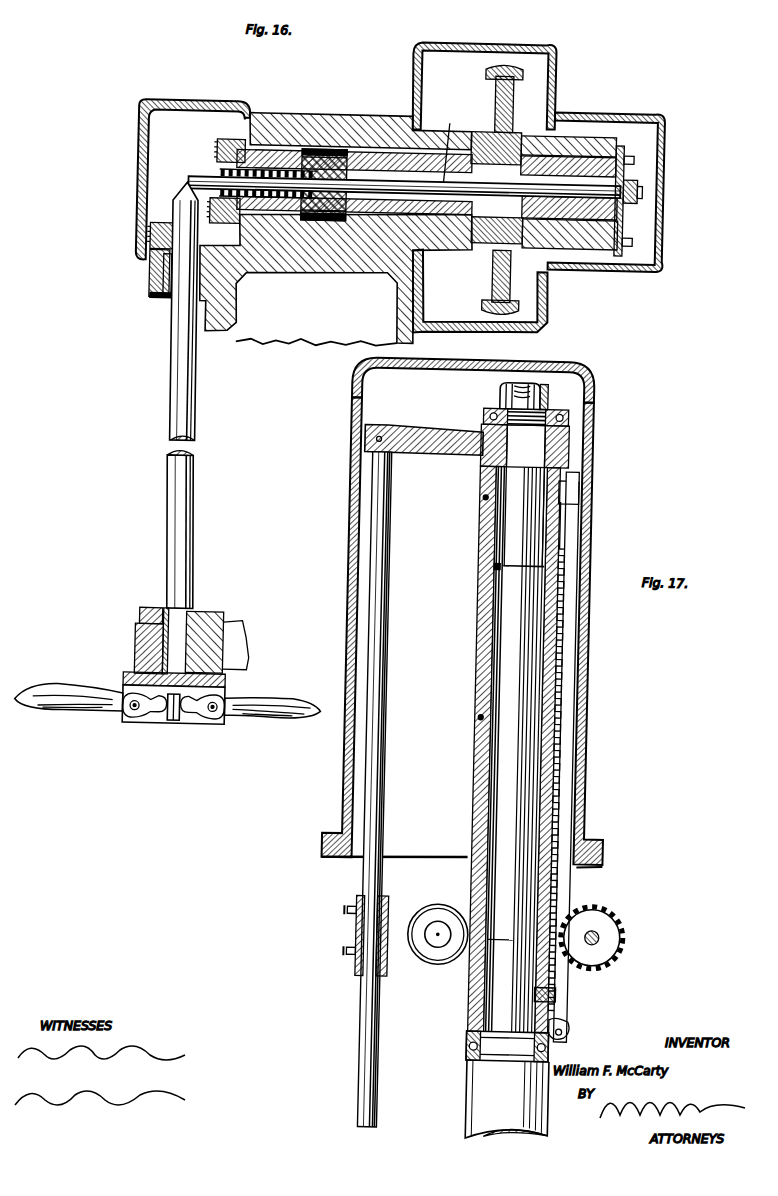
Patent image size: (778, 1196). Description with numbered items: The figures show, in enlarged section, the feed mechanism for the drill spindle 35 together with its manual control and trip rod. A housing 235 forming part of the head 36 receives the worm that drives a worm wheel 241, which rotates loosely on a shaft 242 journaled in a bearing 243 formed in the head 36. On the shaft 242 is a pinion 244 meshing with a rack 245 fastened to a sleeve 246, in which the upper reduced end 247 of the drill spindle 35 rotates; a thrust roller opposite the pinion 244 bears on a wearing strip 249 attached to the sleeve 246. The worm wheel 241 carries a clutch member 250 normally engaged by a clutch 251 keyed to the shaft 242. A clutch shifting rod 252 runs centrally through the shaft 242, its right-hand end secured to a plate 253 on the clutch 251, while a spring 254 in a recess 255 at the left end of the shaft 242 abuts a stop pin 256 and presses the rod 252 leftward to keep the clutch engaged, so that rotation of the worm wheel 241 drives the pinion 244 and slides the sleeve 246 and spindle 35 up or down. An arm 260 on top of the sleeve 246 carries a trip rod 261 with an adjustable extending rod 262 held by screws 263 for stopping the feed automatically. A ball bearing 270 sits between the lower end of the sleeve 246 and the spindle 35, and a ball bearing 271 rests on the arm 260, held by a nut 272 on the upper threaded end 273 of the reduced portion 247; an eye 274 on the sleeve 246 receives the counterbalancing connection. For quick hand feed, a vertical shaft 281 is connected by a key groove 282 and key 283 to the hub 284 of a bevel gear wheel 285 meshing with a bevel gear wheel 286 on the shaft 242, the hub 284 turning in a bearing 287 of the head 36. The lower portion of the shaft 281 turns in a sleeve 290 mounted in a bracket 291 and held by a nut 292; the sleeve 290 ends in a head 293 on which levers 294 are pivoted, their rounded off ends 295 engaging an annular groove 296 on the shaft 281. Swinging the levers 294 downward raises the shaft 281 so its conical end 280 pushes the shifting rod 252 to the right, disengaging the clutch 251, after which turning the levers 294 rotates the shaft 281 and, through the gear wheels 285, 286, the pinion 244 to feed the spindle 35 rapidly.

In FIG. 17, the drill spindle 35 is at (479, 1090).
In FIG. 16, the head 36 is at (289, 345).
In FIG. 16, the housing 235 is at (538, 85).
In FIG. 16, the worm wheel 241 is at (493, 88).
In FIG. 16, the shaft 242 is at (453, 215).
In FIG. 17, the shaft 242 is at (615, 964).
In FIG. 16, the bearing 243 is at (377, 225).
In FIG. 16, the pinion 244 is at (325, 150).
In FIG. 17, the pinion 244 is at (614, 910).
In FIG. 17, the rack 245 is at (566, 763).
In FIG. 17, the sleeve 246 is at (474, 737).
In FIG. 17, the upper reduced end 247 is at (483, 972).
In FIG. 17, the wearing strip 249 is at (474, 780).
In FIG. 16, the clutch member 250 is at (513, 153).
In FIG. 16, the clutch 251 is at (568, 138).
In FIG. 16, the clutch shifting rod 252 is at (447, 143).
In FIG. 17, the clutch shifting rod 252 is at (604, 935).
In FIG. 16, the plate 253 is at (612, 164).
In FIG. 16, the spring 254 is at (282, 150).
In FIG. 16, the recess 255 is at (266, 202).
In FIG. 16, the stop pin 256 is at (216, 178).
In FIG. 17, the arm 260 is at (432, 452).
In FIG. 17, the trip rod 261 is at (388, 705).
In FIG. 17, the extending rod 262 is at (368, 1050).
In FIG. 17, the screws 263 is at (355, 952).
In FIG. 17, the ball bearing 270 is at (473, 1045).
In FIG. 17, the ball bearing 271 is at (482, 417).
In FIG. 17, the nut 272 is at (540, 398).
In FIG. 17, the upper threaded end 273 is at (516, 382).
In FIG. 17, the eye 274 is at (576, 1027).
In FIG. 16, the conical end 280 is at (182, 188).
In FIG. 16, the shaft 281 is at (173, 334).
In FIG. 16, the key groove 282 is at (168, 302).
In FIG. 16, the key 283 is at (154, 300).
In FIG. 16, the hub 284 is at (155, 280).
In FIG. 16, the bevel gear wheel 285 is at (147, 236).
In FIG. 16, the bevel gear wheel 286 is at (220, 143).
In FIG. 16, the bearing 287 is at (217, 303).
In FIG. 16, the sleeve 290 is at (212, 622).
In FIG. 16, the bracket 291 is at (143, 636).
In FIG. 16, the nut 292 is at (155, 614).
In FIG. 16, the head 293 is at (203, 722).
In FIG. 16, the levers 294 is at (300, 706).
In FIG. 16, the rounded off ends 295 is at (165, 718).
In FIG. 16, the annular groove 296 is at (182, 724).